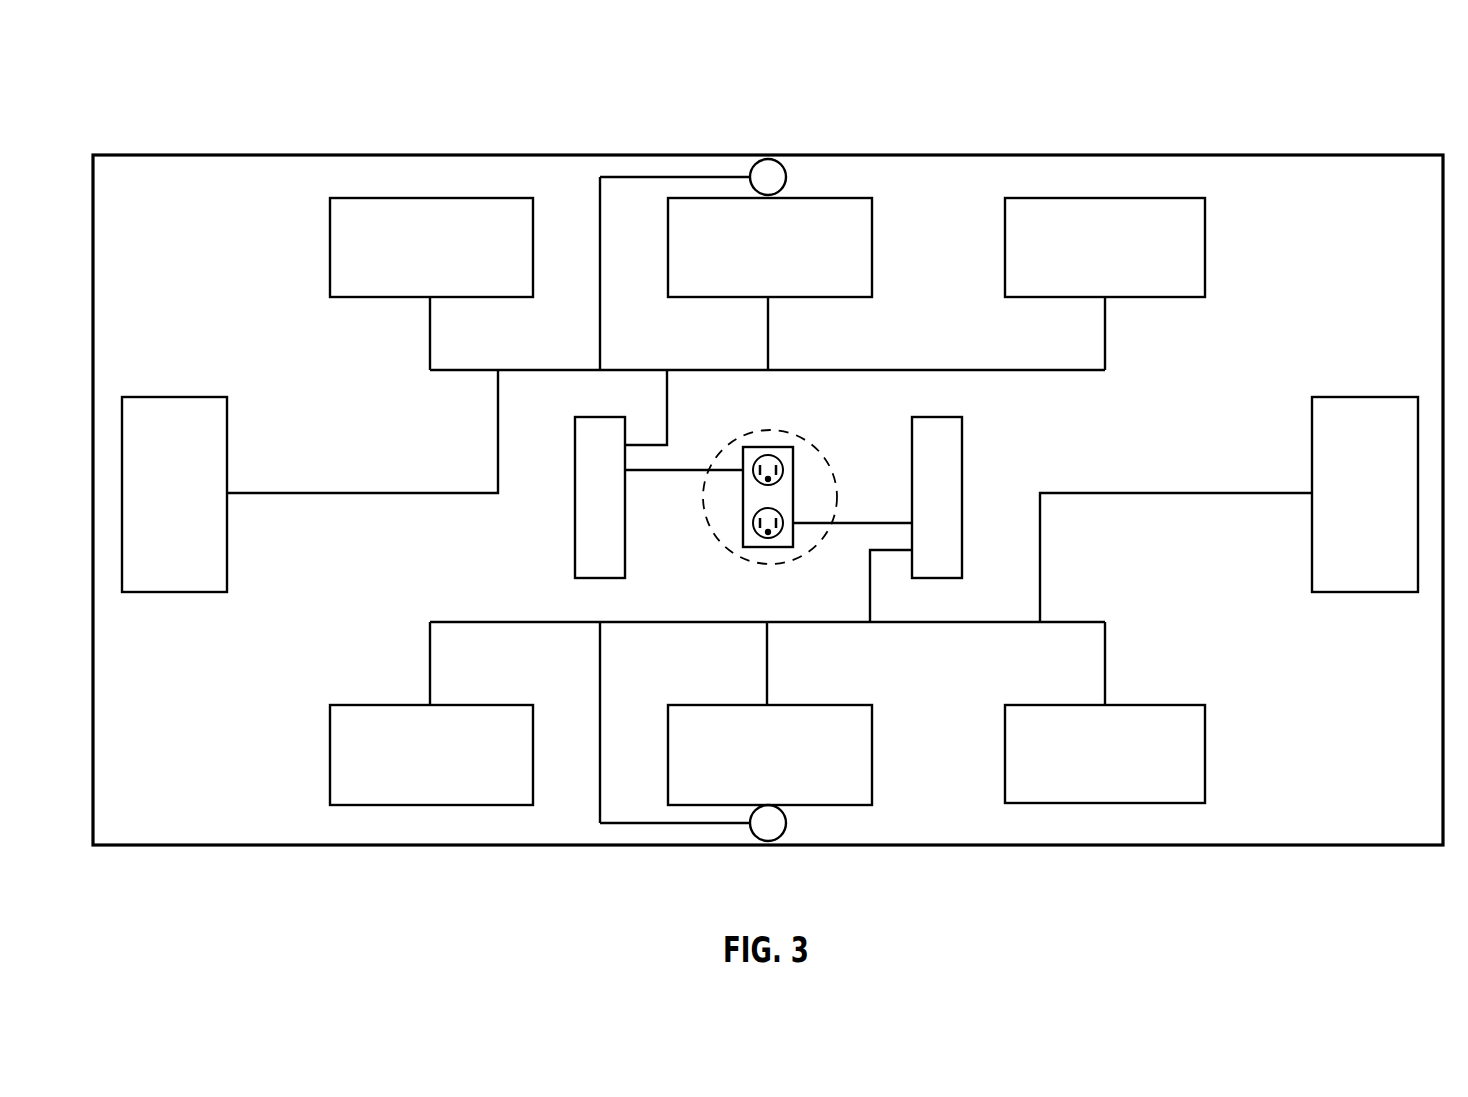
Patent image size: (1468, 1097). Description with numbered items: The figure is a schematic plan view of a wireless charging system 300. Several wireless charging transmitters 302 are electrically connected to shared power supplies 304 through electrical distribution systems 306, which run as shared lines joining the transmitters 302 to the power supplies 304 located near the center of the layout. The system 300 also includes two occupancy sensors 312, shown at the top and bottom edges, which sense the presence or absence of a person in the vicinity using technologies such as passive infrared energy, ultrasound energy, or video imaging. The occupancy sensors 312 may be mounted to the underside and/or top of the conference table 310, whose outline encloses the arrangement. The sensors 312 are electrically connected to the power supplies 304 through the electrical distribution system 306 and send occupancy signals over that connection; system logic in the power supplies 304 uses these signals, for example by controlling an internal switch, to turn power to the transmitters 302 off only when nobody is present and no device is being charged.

The wireless charging system 300 is at (1335, 76).
The wireless charging transmitter 302 is at (400, 197).
The shared power supply 304 is at (588, 417).
The electrical distribution system 306 is at (1035, 372).
The conference table 310 is at (1345, 155).
The occupancy sensor 312 is at (766, 158).